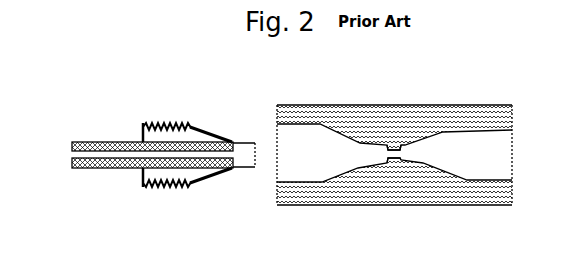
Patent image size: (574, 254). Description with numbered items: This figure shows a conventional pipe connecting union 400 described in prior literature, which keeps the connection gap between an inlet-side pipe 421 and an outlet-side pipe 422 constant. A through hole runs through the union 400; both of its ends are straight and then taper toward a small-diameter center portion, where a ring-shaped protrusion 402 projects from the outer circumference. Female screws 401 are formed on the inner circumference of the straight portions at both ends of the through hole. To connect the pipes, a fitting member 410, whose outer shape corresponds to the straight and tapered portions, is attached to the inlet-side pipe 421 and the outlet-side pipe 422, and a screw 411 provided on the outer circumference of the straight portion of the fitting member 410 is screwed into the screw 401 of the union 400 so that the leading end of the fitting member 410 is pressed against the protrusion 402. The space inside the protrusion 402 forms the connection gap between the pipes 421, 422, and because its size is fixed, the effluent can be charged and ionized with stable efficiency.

The pipe connecting union 400 is at (433, 80).
The screw 401 is at (296, 181).
The ring-shaped protrusion 402 is at (401, 162).
The fitting member 410 is at (200, 186).
The screw 411 is at (173, 124).
The inlet-side pipe 421 is at (107, 141).
The outlet-side pipe 422 is at (152, 163).